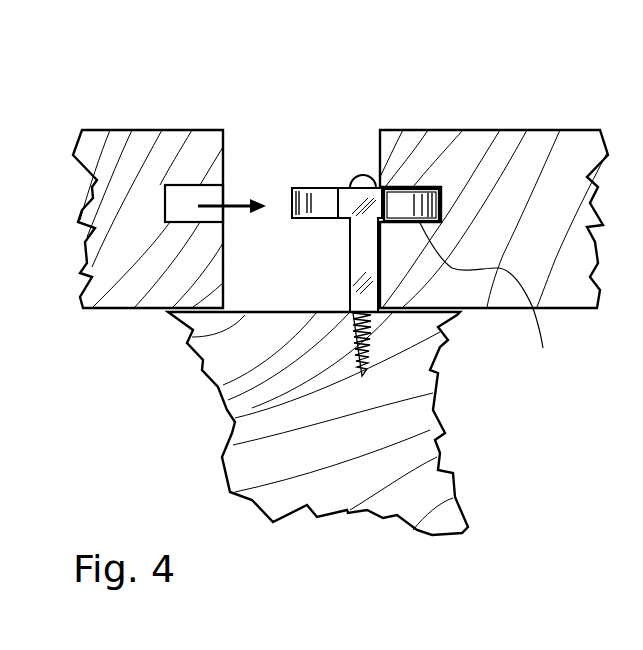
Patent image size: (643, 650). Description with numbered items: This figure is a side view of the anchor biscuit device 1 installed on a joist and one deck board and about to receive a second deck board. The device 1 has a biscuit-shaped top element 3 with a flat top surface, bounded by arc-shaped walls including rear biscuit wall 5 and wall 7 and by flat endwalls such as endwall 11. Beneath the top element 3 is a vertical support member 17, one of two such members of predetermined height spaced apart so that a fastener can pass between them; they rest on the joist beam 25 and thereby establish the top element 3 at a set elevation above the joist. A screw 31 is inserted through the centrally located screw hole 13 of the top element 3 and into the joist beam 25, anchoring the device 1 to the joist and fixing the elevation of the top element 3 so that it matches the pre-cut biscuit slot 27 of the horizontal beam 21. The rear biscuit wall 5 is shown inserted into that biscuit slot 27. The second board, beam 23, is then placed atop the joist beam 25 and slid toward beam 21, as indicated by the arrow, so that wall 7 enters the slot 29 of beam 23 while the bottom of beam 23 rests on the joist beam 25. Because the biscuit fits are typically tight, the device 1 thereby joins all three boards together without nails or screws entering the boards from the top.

The anchor biscuit device 1 is at (376, 188).
The top element 3 is at (298, 204).
The rear biscuit wall 5 is at (415, 187).
The wall 7 is at (310, 212).
The flat endwall 11 is at (439, 136).
The screw hole 13 is at (356, 188).
The vertical support member 17 is at (360, 277).
The horizontal beam 21 is at (517, 137).
The beam 23 is at (98, 142).
The joist beam 25 is at (420, 413).
The pre-cut biscuit slot 27 is at (496, 303).
The slot 29 is at (197, 185).
The screw 31 is at (361, 180).